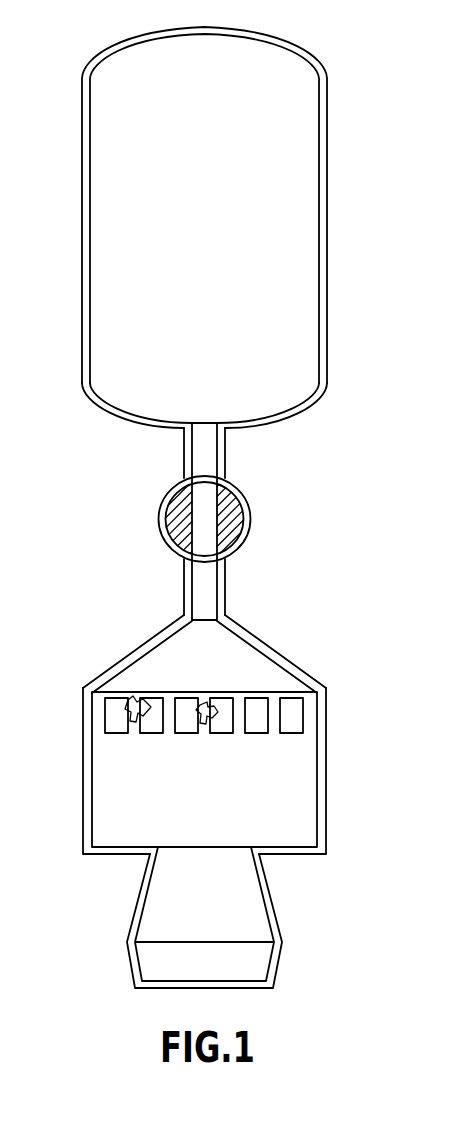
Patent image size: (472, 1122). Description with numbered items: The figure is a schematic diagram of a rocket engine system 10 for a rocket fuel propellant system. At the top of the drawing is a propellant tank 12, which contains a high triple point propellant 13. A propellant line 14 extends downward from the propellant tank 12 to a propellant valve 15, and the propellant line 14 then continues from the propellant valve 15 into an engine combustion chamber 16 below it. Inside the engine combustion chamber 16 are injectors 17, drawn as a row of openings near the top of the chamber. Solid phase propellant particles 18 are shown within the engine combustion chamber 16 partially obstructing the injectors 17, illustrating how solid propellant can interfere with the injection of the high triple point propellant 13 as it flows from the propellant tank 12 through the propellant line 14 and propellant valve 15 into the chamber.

The rocket engine system 10 is at (120, 571).
The propellant tank 12 is at (328, 152).
The high triple point propellant 13 is at (215, 78).
The propellant line 14 is at (226, 447).
The propellant valve 15 is at (233, 515).
The engine combustion chamber 16 is at (83, 770).
The injectors 17 is at (193, 698).
The solid phase propellant particles 18 is at (128, 702).